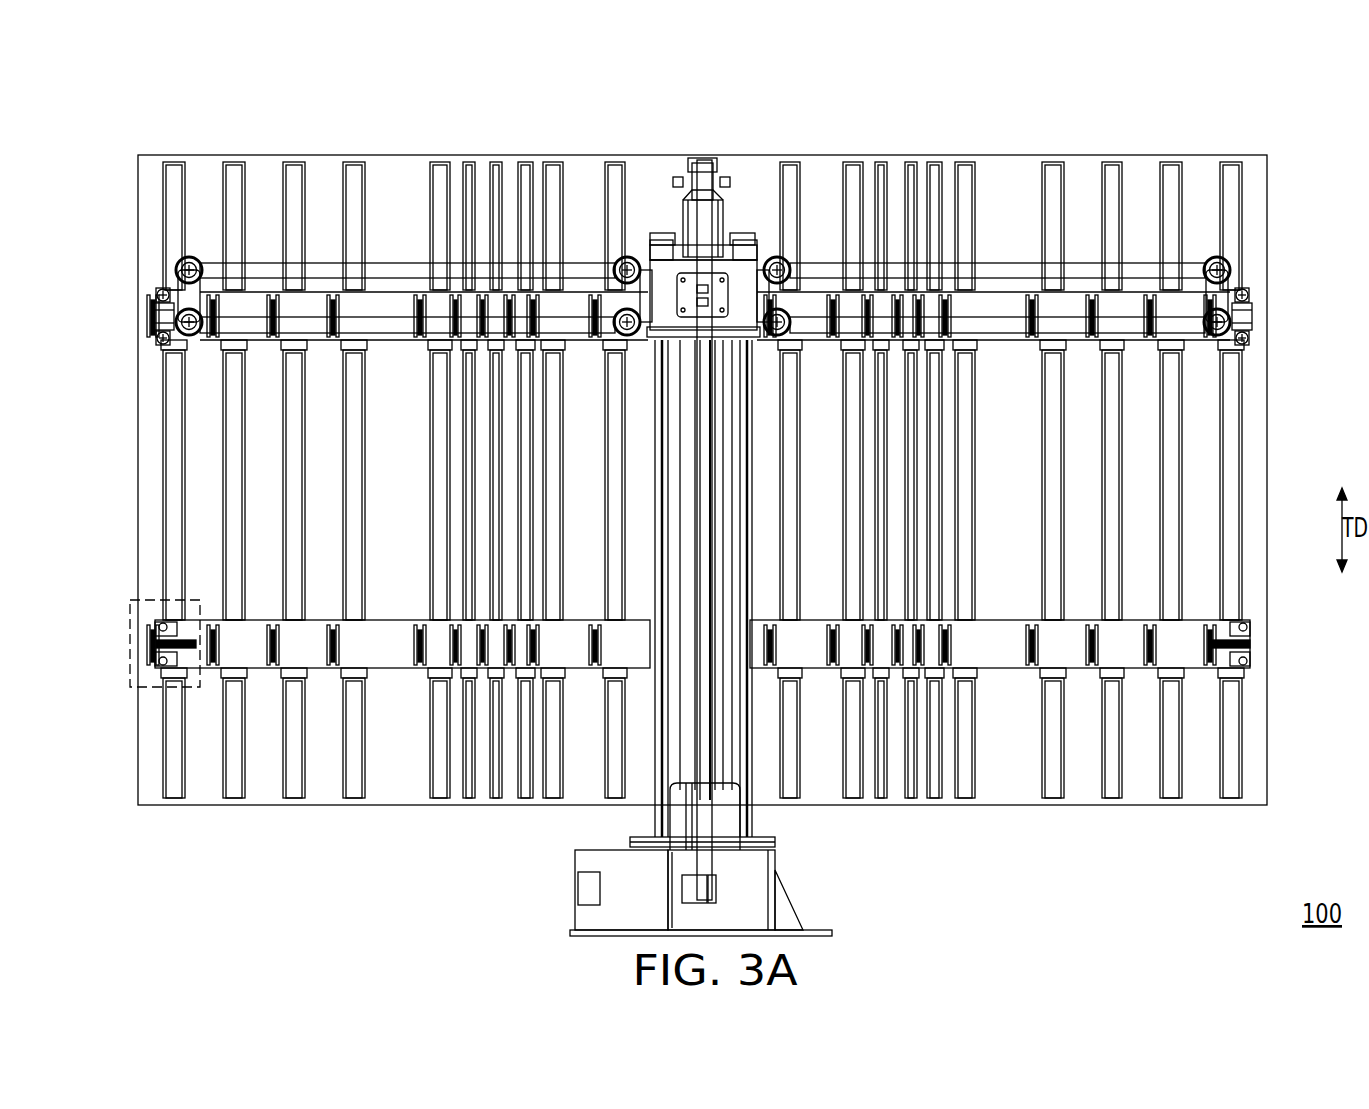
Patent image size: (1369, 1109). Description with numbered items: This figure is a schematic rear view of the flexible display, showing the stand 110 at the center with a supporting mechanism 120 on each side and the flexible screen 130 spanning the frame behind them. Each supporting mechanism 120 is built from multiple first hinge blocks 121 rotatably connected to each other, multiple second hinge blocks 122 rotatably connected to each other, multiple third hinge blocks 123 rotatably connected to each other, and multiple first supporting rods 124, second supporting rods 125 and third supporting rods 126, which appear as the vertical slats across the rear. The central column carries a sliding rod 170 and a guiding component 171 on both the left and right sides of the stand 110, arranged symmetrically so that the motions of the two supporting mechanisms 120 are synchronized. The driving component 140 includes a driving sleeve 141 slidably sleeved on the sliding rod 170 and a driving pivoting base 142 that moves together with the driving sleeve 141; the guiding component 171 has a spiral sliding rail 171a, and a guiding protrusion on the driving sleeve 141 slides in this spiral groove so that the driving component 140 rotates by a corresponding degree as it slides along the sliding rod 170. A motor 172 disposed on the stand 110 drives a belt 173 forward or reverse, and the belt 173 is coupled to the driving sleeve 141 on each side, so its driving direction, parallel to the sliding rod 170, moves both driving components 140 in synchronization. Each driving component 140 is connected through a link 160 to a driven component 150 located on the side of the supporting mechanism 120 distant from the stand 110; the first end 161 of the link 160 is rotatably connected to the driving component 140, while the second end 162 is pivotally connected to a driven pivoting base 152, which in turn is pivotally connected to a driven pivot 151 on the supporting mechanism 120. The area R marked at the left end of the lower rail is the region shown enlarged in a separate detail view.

The stand 110 is at (720, 187).
The supporting mechanism 120 is at (326, 186).
The first hinge blocks 121 is at (565, 298).
The second hinge blocks 122 is at (468, 300).
The third hinge blocks 123 is at (208, 288).
The first supporting rods 124 is at (600, 795).
The second supporting rods 125 is at (473, 795).
The third supporting rods 126 is at (180, 782).
The flexible screen 130 is at (1255, 175).
The driving component 140 is at (757, 212).
The driving sleeve 141 is at (661, 289).
The driving pivoting base 142 is at (641, 280).
The driven component 150 is at (1258, 283).
The driven pivot 151 is at (154, 316).
The driven pivoting base 152 is at (160, 292).
The link 160 is at (208, 362).
The first end 161 is at (626, 258).
The second end 162 is at (156, 335).
The sliding rod 170 is at (660, 570).
The guiding component 171 is at (687, 399).
The spiral sliding rail 171a is at (671, 504).
The motor 172 is at (578, 905).
The belt 173 is at (702, 175).
The area R is at (130, 678).